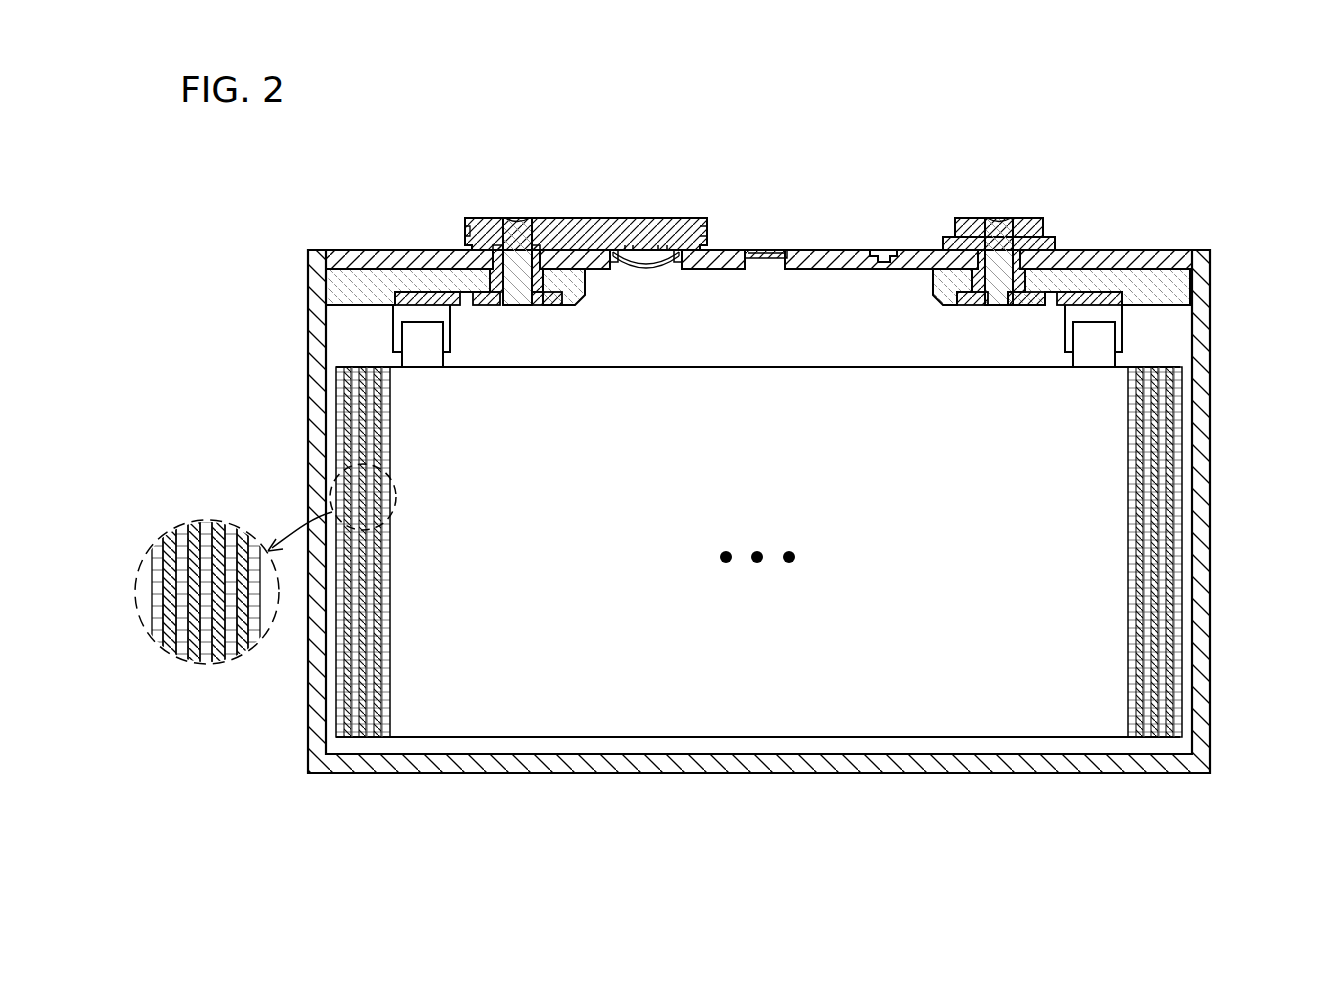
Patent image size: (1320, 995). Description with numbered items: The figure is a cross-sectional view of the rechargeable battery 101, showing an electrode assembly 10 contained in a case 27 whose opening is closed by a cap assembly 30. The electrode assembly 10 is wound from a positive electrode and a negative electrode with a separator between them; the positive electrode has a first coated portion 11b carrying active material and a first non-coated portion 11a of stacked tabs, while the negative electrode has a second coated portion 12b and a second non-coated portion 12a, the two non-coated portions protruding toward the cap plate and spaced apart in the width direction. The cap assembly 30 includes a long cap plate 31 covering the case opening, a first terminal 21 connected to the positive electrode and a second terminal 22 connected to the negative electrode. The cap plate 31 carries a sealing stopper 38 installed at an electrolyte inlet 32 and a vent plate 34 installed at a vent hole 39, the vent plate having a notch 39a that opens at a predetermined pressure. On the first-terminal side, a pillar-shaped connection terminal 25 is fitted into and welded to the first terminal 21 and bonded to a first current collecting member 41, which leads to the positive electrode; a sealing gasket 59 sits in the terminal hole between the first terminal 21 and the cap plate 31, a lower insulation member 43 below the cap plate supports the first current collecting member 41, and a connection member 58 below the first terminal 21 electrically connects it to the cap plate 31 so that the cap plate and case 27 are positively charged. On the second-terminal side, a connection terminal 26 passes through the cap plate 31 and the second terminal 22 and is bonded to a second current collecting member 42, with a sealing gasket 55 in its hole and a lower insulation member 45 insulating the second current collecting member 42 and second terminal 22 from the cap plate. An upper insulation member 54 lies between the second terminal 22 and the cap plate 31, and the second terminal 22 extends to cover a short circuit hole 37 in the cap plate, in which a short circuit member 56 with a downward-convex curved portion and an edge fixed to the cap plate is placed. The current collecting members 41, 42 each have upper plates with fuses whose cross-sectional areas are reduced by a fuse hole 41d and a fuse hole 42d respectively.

The rechargeable battery 101 is at (832, 126).
The electrode assembly 10 is at (814, 748).
The first non-coated portion 11a is at (1105, 333).
The second non-coated portion 12a is at (410, 335).
The first coated portion 11b is at (1172, 367).
The second coated portion 12b is at (1158, 367).
The first terminal 21 is at (1026, 227).
The second terminal 22 is at (490, 232).
The connection terminal 25 is at (997, 228).
The connection terminal 26 is at (517, 230).
The case 27 is at (1197, 496).
The cap assembly 30 is at (729, 240).
The cap plate 31 is at (1172, 258).
The electrolyte inlet 32 is at (881, 270).
The vent plate 34 is at (764, 270).
The short circuit hole 37 is at (619, 262).
The sealing stopper 38 is at (886, 250).
The vent hole 39 is at (790, 253).
The notch 39a is at (767, 251).
The first current collecting member 41 is at (1062, 283).
The fuse hole 41d is at (1060, 298).
The second current collecting member 42 is at (398, 290).
The fuse hole 42d is at (430, 298).
The lower insulation member 43 is at (1175, 287).
The lower insulation member 45 is at (340, 287).
The upper insulation member 54 is at (703, 240).
The sealing gasket 55 is at (497, 280).
The short circuit member 56 is at (654, 265).
The connection member 58 is at (1047, 243).
The sealing gasket 59 is at (977, 262).